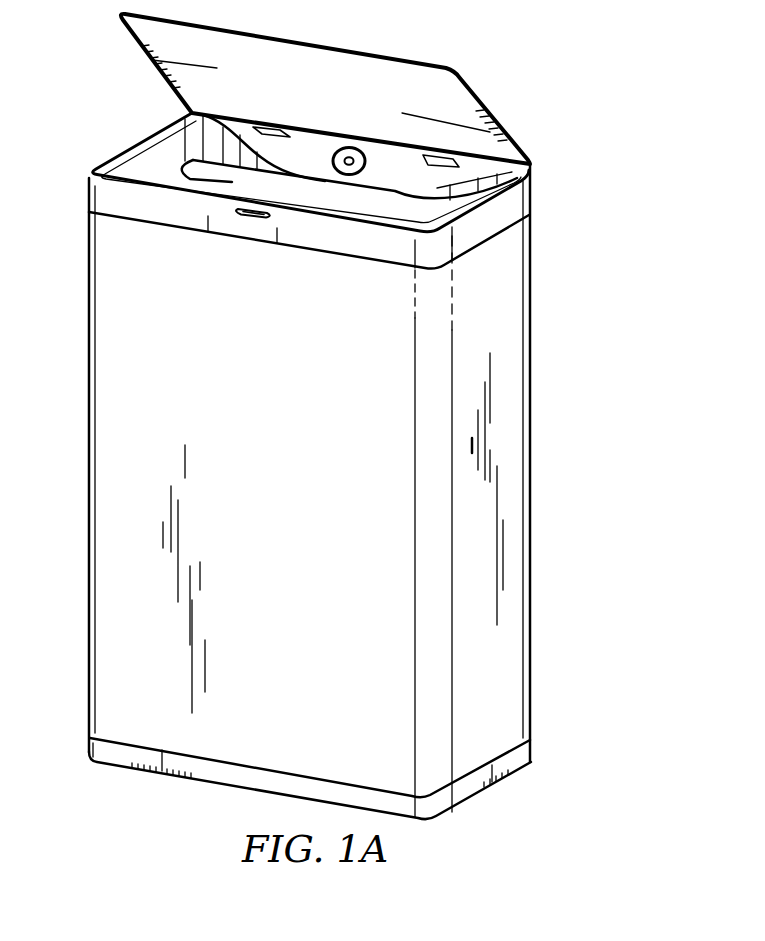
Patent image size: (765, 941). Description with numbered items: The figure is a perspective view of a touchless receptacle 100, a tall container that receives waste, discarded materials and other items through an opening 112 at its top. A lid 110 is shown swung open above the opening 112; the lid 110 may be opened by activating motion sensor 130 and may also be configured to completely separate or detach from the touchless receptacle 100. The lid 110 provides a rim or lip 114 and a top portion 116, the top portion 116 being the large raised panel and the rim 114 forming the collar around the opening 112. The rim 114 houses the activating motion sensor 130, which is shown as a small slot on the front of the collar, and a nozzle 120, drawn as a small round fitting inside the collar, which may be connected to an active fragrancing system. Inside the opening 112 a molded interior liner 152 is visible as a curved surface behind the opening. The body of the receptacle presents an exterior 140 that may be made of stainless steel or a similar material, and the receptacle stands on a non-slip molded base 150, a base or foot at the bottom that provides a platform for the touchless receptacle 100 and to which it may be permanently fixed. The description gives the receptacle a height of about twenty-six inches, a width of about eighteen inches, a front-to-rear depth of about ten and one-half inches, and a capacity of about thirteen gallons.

The touchless receptacle 100 is at (486, 30).
The lid 110 is at (478, 91).
The opening 112 is at (398, 210).
The rim or lip 114 is at (531, 203).
The top portion 116 is at (279, 62).
The nozzle 120 is at (338, 151).
The activating motion sensor 130 is at (240, 218).
The exterior 140 is at (533, 410).
The non-slip molded base 150 is at (532, 753).
The molded interior liner 152 is at (210, 178).